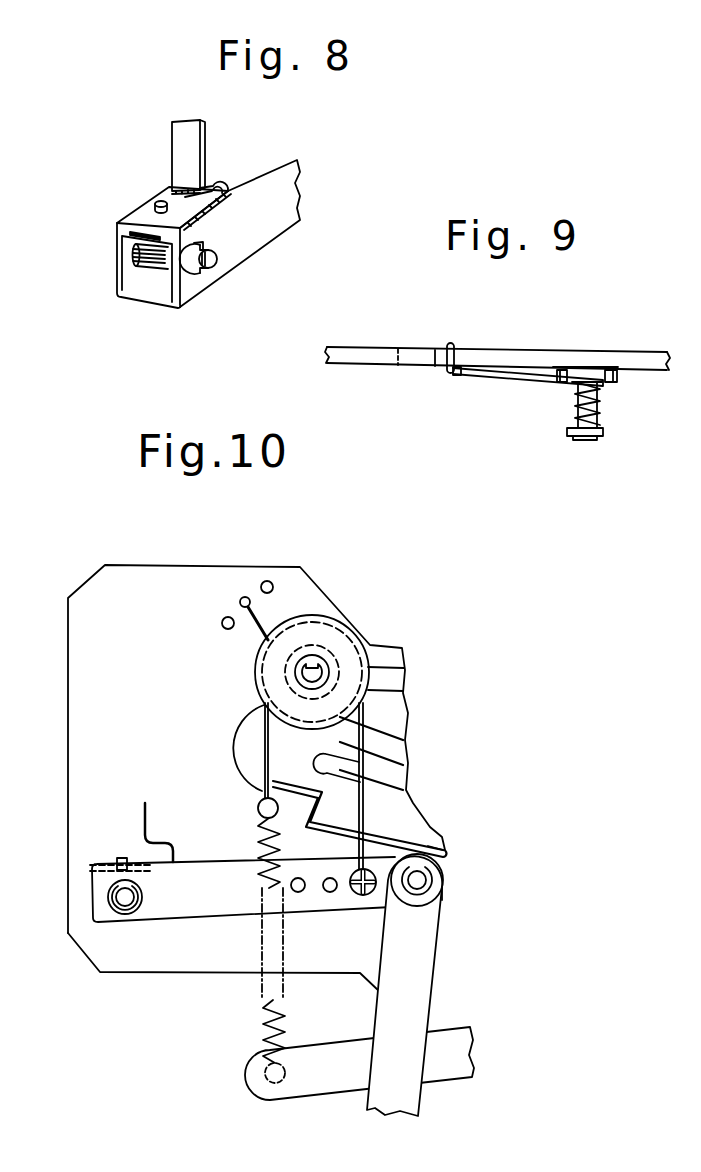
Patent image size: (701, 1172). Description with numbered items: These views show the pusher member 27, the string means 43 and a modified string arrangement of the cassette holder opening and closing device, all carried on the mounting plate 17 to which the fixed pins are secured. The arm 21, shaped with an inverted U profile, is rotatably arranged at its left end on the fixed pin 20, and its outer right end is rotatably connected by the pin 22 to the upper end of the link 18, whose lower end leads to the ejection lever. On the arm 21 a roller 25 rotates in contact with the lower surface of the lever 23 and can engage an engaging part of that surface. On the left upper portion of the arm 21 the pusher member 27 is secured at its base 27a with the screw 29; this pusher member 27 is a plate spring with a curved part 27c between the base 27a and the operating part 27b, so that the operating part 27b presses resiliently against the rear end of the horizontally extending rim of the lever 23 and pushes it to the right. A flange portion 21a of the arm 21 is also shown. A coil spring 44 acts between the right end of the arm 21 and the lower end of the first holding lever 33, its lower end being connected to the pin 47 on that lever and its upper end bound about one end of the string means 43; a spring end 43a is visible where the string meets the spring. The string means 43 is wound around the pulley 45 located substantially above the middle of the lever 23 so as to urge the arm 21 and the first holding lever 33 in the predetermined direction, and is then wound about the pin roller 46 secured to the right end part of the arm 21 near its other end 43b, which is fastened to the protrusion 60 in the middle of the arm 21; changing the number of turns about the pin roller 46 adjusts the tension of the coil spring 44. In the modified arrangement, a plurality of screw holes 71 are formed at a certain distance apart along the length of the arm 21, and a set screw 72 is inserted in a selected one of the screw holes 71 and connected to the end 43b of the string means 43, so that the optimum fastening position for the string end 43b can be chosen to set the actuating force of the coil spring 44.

In FIG. 10, the mounting plate 17 is at (160, 570).
In FIG. 10, the link 18 is at (443, 910).
In FIG. 8, the fixed pin 20 is at (212, 264).
In FIG. 10, the fixed pin 20 is at (108, 897).
In FIG. 8, the arm 21 is at (282, 228).
In FIG. 9, the arm 21 is at (362, 358).
In FIG. 10, the arm 21 is at (168, 915).
In FIG. 8, the flange of lever member 21a is at (192, 204).
In FIG. 10, the pin 22 is at (432, 882).
In FIG. 10, the lever 23 is at (248, 745).
In FIG. 10, the roller 25 is at (412, 905).
In FIG. 8, the pusher member 27 is at (165, 168).
In FIG. 10, the pusher member 27 is at (131, 837).
In FIG. 8, the base 27a is at (140, 239).
In FIG. 8, the operating part 27b is at (182, 148).
In FIG. 8, the curved part 27c is at (226, 180).
In FIG. 8, the screw 29 is at (155, 206).
In FIG. 10, the first holding lever 33 is at (320, 1097).
In FIG. 9, the string means 43 is at (520, 380).
In FIG. 10, the string means 43 is at (367, 801).
In FIG. 10, the spring end of lever 43a is at (262, 795).
In FIG. 9, the other end of the string means 43b is at (450, 372).
In FIG. 10, the other end of the string means 43b is at (394, 845).
In FIG. 10, the coil spring 44 is at (263, 1022).
In FIG. 10, the pulley 45 is at (343, 628).
In FIG. 9, the pin roller 46 is at (593, 433).
In FIG. 10, the pin 47 is at (265, 1073).
In FIG. 9, the protrusion 60 is at (430, 350).
In FIG. 10, the screw holes 71 is at (352, 878).
In FIG. 10, the set screw 72 is at (360, 897).